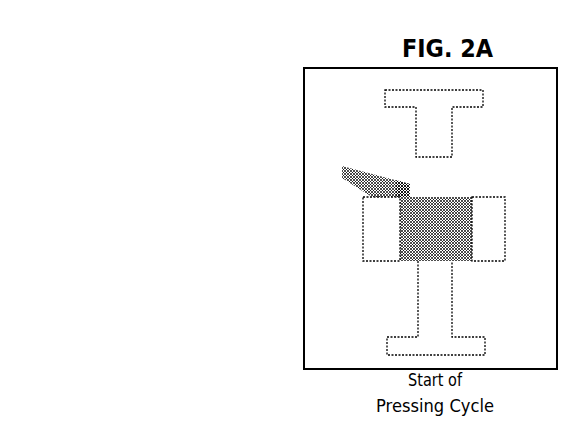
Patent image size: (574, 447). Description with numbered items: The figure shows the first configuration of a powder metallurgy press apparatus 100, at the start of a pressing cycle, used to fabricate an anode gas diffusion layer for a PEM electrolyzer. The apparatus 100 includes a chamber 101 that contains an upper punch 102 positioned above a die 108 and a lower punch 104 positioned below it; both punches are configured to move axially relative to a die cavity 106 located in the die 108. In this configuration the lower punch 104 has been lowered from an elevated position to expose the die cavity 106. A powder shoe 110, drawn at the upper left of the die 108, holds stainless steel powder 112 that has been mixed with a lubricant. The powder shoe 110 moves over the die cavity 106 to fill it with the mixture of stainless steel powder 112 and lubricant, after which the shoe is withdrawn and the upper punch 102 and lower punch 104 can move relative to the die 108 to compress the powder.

The powder metallurgy press apparatus 100 is at (293, 42).
The chamber 101 is at (296, 86).
The upper punch 102 is at (404, 135).
The powder shoe 110 is at (324, 173).
The stainless steel powder 112 is at (412, 185).
The die 108 is at (354, 228).
The die cavity 106 is at (414, 242).
The lower punch 104 is at (409, 323).